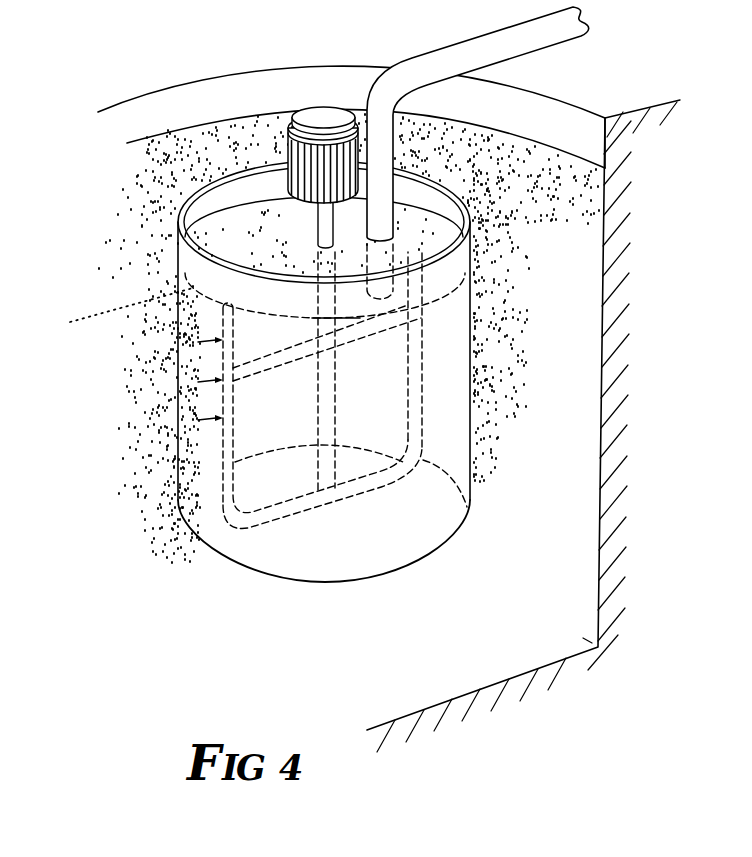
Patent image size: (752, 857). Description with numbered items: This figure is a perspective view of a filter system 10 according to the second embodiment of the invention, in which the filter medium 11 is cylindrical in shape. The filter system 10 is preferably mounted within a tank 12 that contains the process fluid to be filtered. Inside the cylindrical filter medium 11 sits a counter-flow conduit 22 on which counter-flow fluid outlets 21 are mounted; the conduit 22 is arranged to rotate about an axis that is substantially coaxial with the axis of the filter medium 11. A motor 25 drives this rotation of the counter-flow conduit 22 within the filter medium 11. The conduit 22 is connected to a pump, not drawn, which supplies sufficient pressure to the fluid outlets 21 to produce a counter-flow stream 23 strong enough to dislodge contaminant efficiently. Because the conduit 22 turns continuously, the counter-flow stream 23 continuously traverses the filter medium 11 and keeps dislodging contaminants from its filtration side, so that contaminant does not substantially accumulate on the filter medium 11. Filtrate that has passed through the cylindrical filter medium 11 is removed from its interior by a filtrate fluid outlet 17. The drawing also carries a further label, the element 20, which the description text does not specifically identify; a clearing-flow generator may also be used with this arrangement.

The underground installation assembly 10 is at (118, 82).
The filter medium 11 is at (235, 185).
The tank 12 is at (629, 112).
The filtrate fluid outlet 17 is at (476, 55).
The tubular frame 20 is at (432, 404).
The counter-flow fluid outlets 21 is at (221, 459).
The counter-flow conduit 22 is at (267, 523).
The counter-flow stream 23 is at (220, 500).
The motor 25 is at (317, 116).